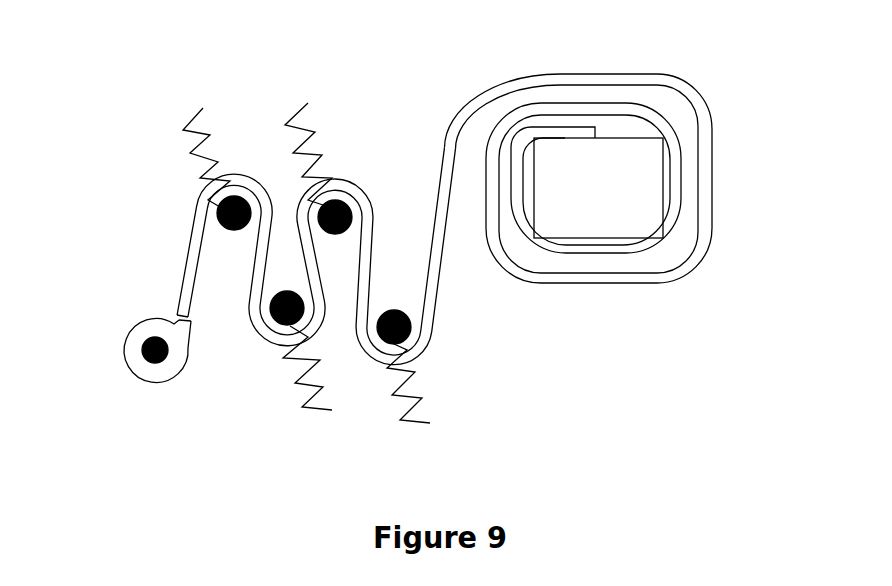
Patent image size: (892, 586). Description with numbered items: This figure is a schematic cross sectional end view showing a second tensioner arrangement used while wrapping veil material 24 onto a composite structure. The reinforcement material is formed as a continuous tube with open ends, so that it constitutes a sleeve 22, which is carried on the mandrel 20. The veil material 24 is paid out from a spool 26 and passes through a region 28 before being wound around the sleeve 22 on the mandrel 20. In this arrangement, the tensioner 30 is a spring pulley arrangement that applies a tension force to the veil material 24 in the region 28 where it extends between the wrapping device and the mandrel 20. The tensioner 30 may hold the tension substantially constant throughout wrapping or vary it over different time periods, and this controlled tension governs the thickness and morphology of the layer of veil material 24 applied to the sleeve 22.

The mandrel 20 is at (620, 187).
The sleeve 22 is at (664, 205).
The veil material 24 is at (620, 75).
The spool 26 is at (131, 331).
The region of the veil material 28 is at (411, 272).
The tensioner 30 is at (305, 388).